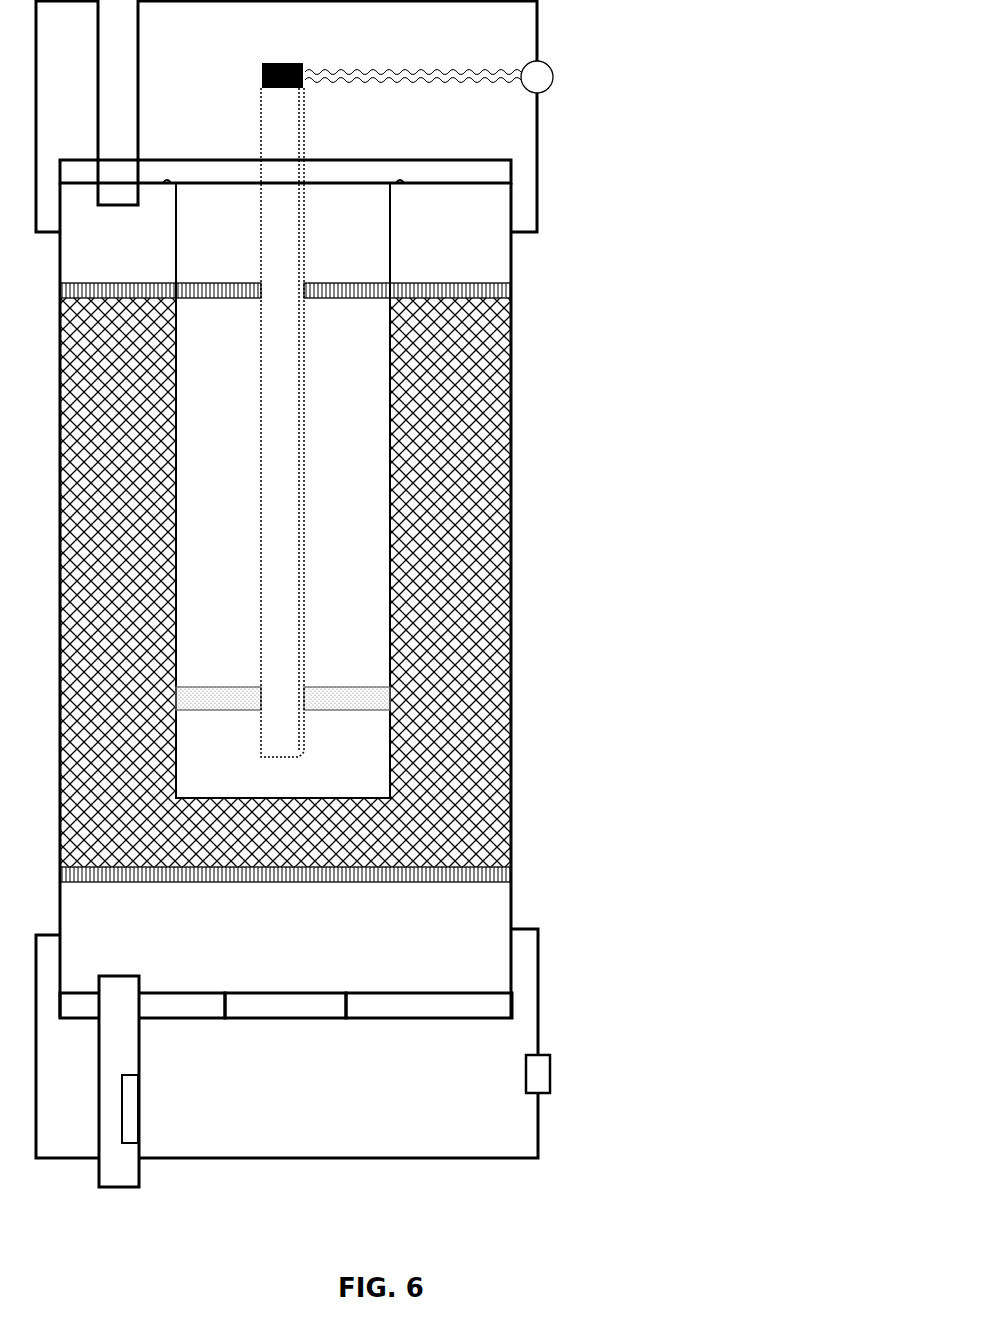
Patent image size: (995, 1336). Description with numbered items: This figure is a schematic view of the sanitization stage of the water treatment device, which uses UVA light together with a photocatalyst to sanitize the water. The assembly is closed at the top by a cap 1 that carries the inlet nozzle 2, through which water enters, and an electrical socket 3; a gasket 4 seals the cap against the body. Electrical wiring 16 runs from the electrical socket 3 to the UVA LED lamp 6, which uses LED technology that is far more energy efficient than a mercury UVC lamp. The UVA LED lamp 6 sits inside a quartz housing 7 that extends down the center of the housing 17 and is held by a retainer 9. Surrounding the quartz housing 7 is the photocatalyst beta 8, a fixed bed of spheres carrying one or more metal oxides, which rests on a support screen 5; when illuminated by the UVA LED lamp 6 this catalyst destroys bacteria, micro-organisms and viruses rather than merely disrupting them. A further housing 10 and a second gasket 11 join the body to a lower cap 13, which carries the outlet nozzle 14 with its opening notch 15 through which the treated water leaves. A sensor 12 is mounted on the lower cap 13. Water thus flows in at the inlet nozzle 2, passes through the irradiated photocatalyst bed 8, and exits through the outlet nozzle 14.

The cap 1 is at (470, 110).
The inlet nozzle 2 is at (127, 143).
The electrical socket 3 is at (553, 77).
The gasket 4 is at (473, 174).
The support screen 5 is at (512, 290).
The UVA LED lamp 6 is at (304, 410).
The quartz housing 7 is at (357, 530).
The photocatalyst beta 8 is at (445, 617).
The retainer 9 is at (512, 697).
The housing 10 is at (512, 874).
The gasket 11 is at (512, 1003).
The sensor 12 is at (550, 1074).
The cap 13 is at (473, 1144).
The outlet nozzle 14 is at (140, 1036).
The opening notch 15 is at (140, 1111).
The electrical wiring 16 is at (388, 70).
The housing 17 is at (512, 781).